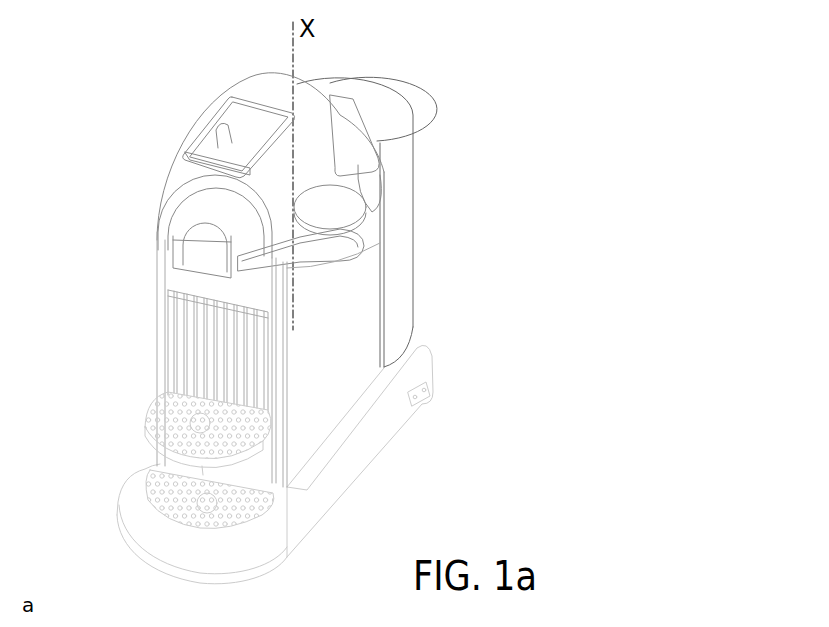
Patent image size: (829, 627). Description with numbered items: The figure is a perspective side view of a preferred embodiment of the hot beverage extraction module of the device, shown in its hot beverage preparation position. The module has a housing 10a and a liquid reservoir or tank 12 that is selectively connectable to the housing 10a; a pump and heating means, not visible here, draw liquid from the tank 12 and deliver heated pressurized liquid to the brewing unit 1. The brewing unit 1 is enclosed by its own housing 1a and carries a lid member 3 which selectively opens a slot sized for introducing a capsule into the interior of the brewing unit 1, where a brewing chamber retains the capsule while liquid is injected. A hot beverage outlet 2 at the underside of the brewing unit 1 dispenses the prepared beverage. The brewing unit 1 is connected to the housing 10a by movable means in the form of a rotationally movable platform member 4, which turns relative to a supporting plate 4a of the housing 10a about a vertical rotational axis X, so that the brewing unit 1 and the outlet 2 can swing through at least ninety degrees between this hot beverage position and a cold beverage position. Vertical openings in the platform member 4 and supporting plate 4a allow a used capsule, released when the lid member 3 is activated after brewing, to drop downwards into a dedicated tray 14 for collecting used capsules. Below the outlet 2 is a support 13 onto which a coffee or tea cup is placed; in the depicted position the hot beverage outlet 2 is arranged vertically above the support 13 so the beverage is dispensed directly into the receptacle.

The brewing unit 1 is at (250, 82).
The housing 1a is at (332, 153).
The hot beverage outlet 2 is at (200, 283).
The lid member 3 is at (235, 118).
The platform member 4 is at (335, 202).
The supporting plate 4a is at (335, 251).
The housing 10a is at (268, 359).
The liquid reservoir or tank 12 is at (403, 150).
The support 13 is at (158, 432).
The tray 14 is at (180, 352).